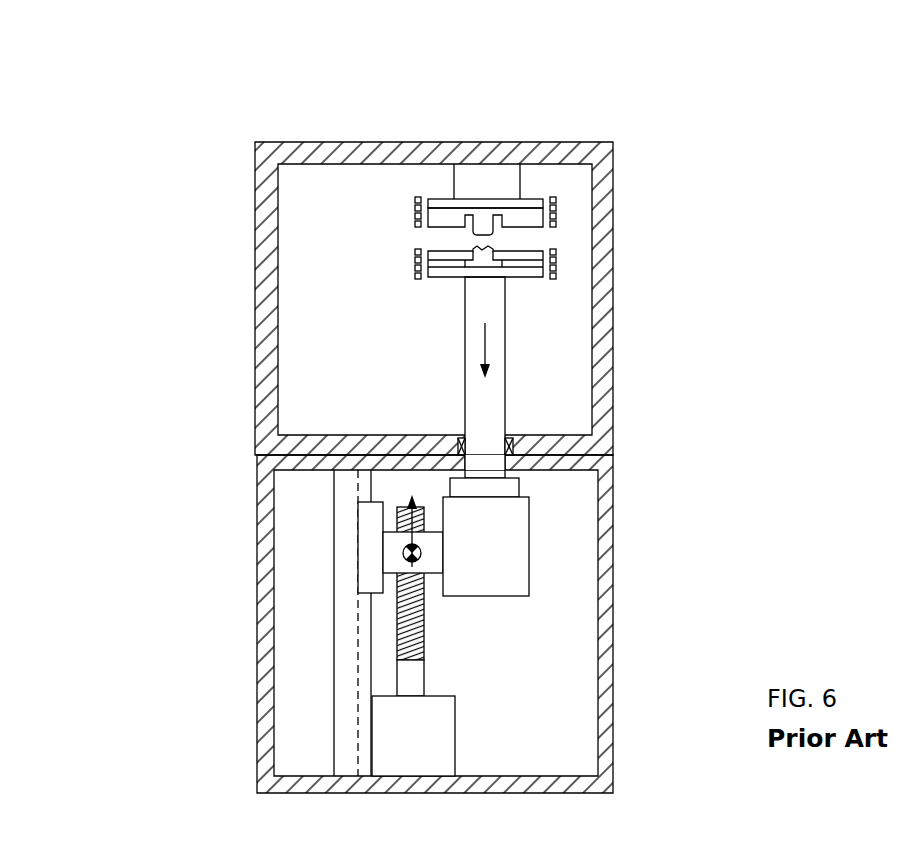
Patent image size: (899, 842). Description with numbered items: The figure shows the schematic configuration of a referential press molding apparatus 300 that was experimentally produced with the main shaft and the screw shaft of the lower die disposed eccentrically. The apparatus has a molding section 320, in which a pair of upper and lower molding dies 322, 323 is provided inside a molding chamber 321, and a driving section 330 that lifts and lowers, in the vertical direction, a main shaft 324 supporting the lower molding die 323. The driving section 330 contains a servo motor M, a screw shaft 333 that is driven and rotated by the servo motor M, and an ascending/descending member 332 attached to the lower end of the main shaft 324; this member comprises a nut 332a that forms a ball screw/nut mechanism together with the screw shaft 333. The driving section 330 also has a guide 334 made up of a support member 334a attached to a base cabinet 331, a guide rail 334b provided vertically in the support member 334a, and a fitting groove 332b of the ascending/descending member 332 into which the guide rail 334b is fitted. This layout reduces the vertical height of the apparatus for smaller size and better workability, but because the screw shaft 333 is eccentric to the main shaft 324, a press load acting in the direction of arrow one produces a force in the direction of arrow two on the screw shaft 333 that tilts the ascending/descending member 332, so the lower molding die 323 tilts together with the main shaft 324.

The press molding apparatus 300 is at (212, 270).
The molding section 320 is at (648, 274).
The molding chamber 321 is at (383, 142).
The upper molding die 322 is at (483, 222).
The lower molding die 323 is at (486, 256).
The main shaft 324 is at (467, 372).
The driving section 330 is at (644, 465).
The base cabinet 331 is at (270, 516).
The ascending/descending member 332 is at (510, 568).
The nut 332a is at (385, 572).
The fitting groove 332b is at (355, 578).
The screw shaft 333 is at (402, 615).
The guide 334 is at (322, 542).
The support member 334a is at (333, 560).
The guide rail 334b is at (363, 680).
The servo motor M is at (383, 756).